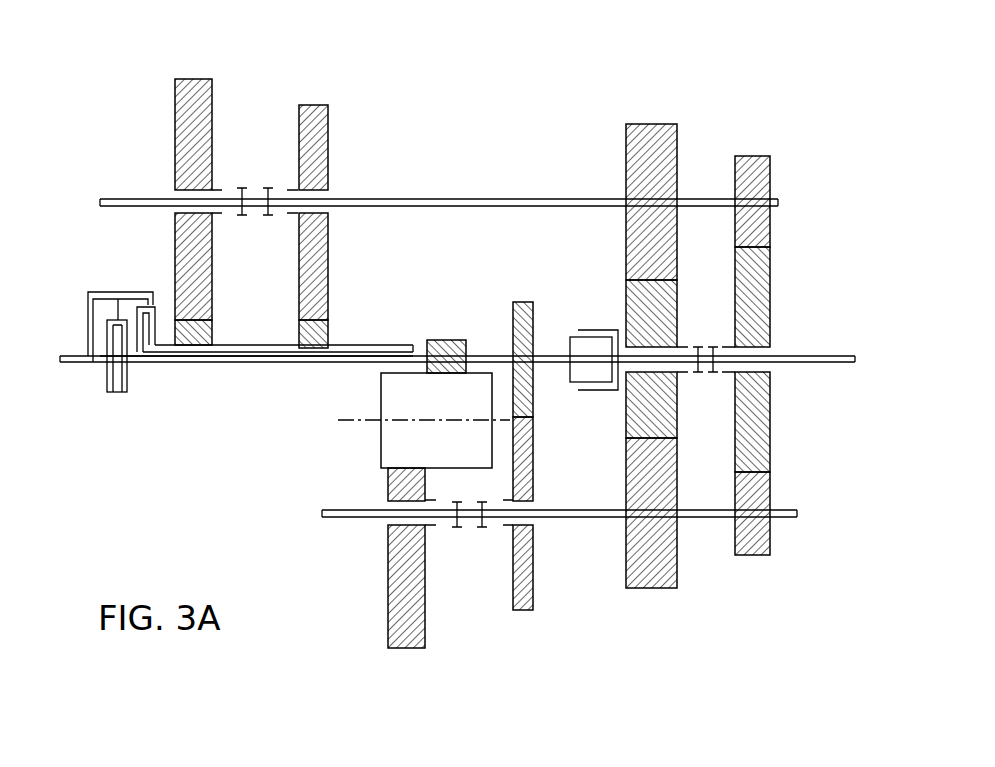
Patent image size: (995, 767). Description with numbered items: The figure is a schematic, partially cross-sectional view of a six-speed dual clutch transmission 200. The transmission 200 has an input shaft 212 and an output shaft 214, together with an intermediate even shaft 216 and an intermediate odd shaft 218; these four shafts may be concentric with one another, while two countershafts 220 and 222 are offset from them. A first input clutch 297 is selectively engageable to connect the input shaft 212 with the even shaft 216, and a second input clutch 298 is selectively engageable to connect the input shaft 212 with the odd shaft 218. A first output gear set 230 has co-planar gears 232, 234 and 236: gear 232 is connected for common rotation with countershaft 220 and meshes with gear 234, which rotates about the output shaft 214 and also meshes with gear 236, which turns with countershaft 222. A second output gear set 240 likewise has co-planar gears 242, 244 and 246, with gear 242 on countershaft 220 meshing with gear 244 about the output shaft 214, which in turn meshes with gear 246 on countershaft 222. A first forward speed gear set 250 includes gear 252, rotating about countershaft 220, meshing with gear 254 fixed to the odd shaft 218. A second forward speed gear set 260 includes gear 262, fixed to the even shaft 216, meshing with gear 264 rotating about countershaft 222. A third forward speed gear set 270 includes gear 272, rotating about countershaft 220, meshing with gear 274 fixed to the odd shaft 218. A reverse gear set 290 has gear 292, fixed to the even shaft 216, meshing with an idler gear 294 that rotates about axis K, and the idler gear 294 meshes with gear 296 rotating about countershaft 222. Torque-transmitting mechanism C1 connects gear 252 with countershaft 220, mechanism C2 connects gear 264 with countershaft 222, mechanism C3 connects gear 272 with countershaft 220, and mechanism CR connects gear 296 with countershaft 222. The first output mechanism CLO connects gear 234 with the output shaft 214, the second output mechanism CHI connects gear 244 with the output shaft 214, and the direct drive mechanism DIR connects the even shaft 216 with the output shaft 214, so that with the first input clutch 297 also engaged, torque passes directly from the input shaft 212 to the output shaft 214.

The transmission 200 is at (120, 75).
The input shaft 212 is at (68, 364).
The output shaft 214 is at (817, 355).
The intermediate shaft 216 is at (158, 364).
The intermediate shaft 218 is at (192, 354).
The countershaft 220 is at (466, 198).
The countershaft 222 is at (357, 520).
The first output gear set 230 is at (776, 343).
The gear 232 is at (770, 180).
The gear 234 is at (770, 274).
The gear 236 is at (770, 480).
The second output gear set 240 is at (639, 349).
The gear 242 is at (626, 150).
The gear 244 is at (626, 285).
The gear 246 is at (626, 478).
The first forward speed gear set 250 is at (195, 183).
The gear 252 is at (175, 130).
The gear 254 is at (212, 332).
The second forward speed gear set 260 is at (556, 467).
The gear 262 is at (535, 302).
The gear 264 is at (533, 450).
The third forward speed gear set 270 is at (347, 196).
The gear 272 is at (328, 156).
The gear 274 is at (328, 292).
The reverse gear set 290 is at (373, 590).
The gear 292 is at (466, 340).
The idler gear 294 is at (422, 405).
The gear 296 is at (388, 586).
The first input clutch 297 is at (106, 375).
The second input clutch 298 is at (138, 372).
The torque-transmitting mechanism C1 is at (238, 186).
The torque-transmitting mechanism C2 is at (476, 532).
The torque-transmitting mechanism C3 is at (273, 186).
The torque-transmitting mechanism CR is at (448, 532).
The second output torque-transmitting mechanism CHI is at (697, 345).
The first output torque-transmitting mechanism CLO is at (714, 345).
The direct drive torque-transmitting mechanism DIR is at (577, 329).
The axis K is at (347, 428).